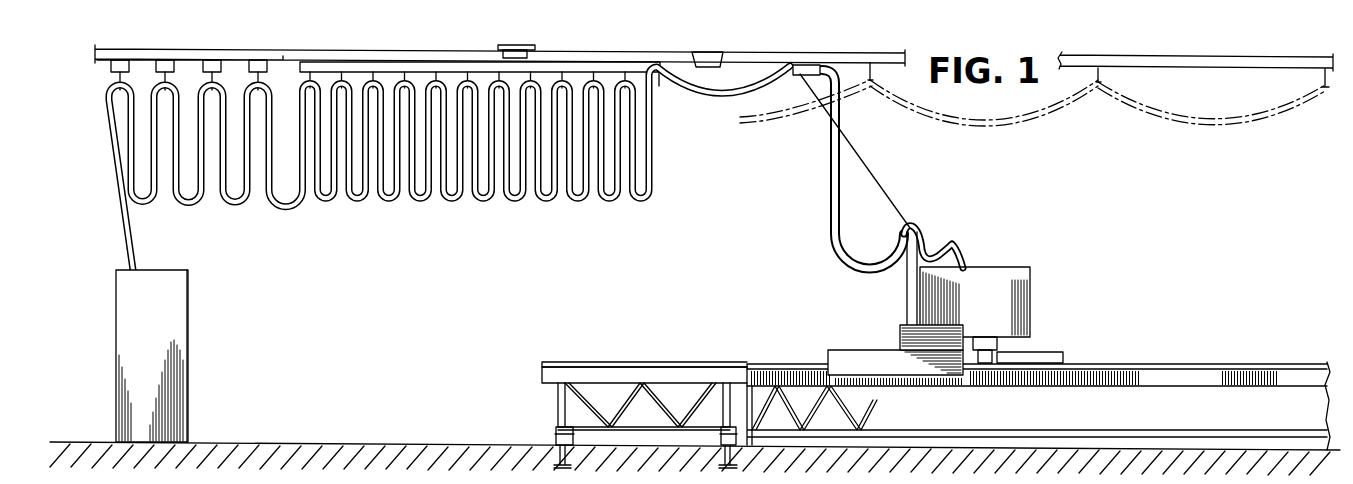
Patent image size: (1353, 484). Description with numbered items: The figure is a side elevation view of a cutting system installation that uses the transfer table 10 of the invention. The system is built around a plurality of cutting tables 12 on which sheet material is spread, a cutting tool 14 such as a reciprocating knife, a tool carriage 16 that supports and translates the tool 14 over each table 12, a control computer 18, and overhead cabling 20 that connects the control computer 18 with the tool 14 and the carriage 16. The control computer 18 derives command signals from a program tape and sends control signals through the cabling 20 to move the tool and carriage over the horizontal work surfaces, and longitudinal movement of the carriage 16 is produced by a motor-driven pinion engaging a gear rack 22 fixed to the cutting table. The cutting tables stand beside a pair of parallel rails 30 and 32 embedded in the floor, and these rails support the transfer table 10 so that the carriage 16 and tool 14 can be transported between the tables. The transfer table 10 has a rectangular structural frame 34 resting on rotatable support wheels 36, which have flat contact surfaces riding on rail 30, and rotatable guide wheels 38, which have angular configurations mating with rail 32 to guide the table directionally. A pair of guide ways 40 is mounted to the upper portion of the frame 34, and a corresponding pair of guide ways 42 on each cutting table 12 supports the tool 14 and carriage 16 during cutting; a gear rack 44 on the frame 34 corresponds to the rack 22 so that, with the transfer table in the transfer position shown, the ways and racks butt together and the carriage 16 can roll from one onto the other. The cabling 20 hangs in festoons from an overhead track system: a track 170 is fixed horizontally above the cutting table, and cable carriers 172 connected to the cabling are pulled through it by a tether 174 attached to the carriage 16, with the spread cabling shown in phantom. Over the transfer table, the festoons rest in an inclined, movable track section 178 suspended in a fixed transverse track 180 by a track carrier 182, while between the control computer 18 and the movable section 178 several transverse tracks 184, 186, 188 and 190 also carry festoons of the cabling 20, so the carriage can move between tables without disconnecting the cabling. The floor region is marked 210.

The transfer table 10 is at (633, 404).
The cutting table 12 is at (1038, 378).
The cutting tool 14 is at (986, 362).
The tool carriage 16 is at (999, 267).
The control computer 18 is at (189, 351).
The overhead cabling 20 is at (421, 203).
The gear rack 22 is at (770, 365).
The rail 30 is at (560, 446).
The rail 32 is at (738, 461).
The structural frame 34 is at (558, 400).
The support wheel 36 is at (557, 440).
The guide wheel 38 is at (720, 442).
The guide way 40 is at (708, 364).
The guide way 42 is at (1232, 367).
The gear rack 44 is at (630, 364).
The track 170 is at (1214, 65).
The cable carrier 172 is at (594, 66).
The tether 174 is at (877, 178).
The movable section of track 178 is at (358, 68).
The fixed transverse track 180 is at (502, 48).
The track carrier 182 is at (522, 57).
The transverse track 184 is at (122, 60).
The transverse track 186 is at (170, 60).
The transverse track 188 is at (217, 60).
The transverse track 190 is at (266, 60).
The floor 210 is at (632, 482).